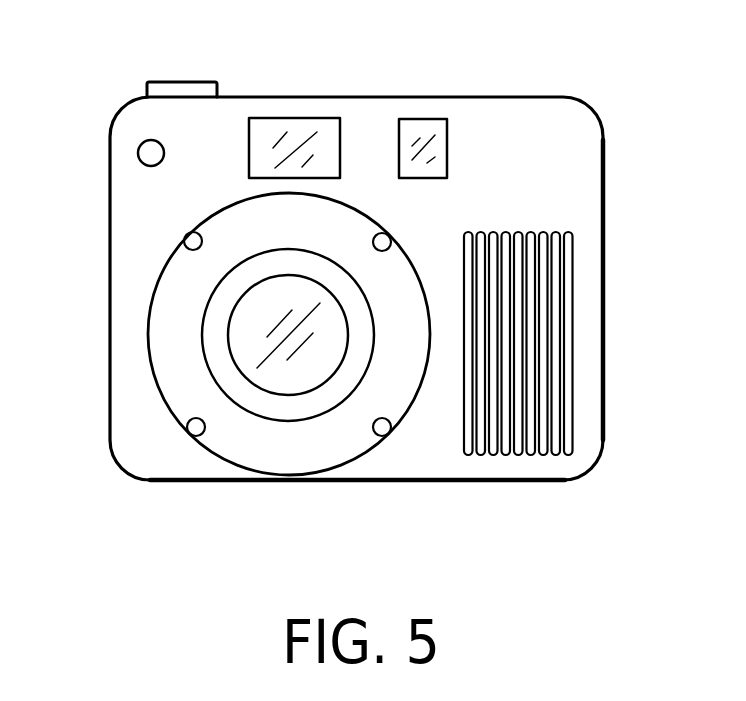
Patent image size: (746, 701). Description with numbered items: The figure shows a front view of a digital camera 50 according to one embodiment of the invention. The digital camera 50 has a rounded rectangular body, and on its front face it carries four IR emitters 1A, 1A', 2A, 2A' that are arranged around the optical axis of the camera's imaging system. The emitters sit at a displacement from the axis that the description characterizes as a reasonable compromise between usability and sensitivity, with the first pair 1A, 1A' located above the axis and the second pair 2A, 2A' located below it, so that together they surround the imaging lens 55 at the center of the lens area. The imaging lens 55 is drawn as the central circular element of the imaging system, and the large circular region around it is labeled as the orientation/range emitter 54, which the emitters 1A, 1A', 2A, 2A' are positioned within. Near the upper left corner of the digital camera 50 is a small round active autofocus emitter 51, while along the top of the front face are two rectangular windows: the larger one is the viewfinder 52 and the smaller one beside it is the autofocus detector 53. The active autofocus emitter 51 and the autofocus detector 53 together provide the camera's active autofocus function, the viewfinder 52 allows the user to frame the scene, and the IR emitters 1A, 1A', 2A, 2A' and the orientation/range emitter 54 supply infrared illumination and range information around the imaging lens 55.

The digital camera 50 is at (582, 170).
The active autofocus emitter 51 is at (138, 152).
The viewfinder 52 is at (297, 120).
The autofocus detector 53 is at (422, 120).
The orientation/range emitter 54 is at (202, 447).
The imaging lens 55 is at (310, 377).
The IR emitter 1A is at (185, 208).
The IR emitter 1A' is at (419, 225).
The IR emitter 2A is at (163, 435).
The IR emitter 2A' is at (416, 442).